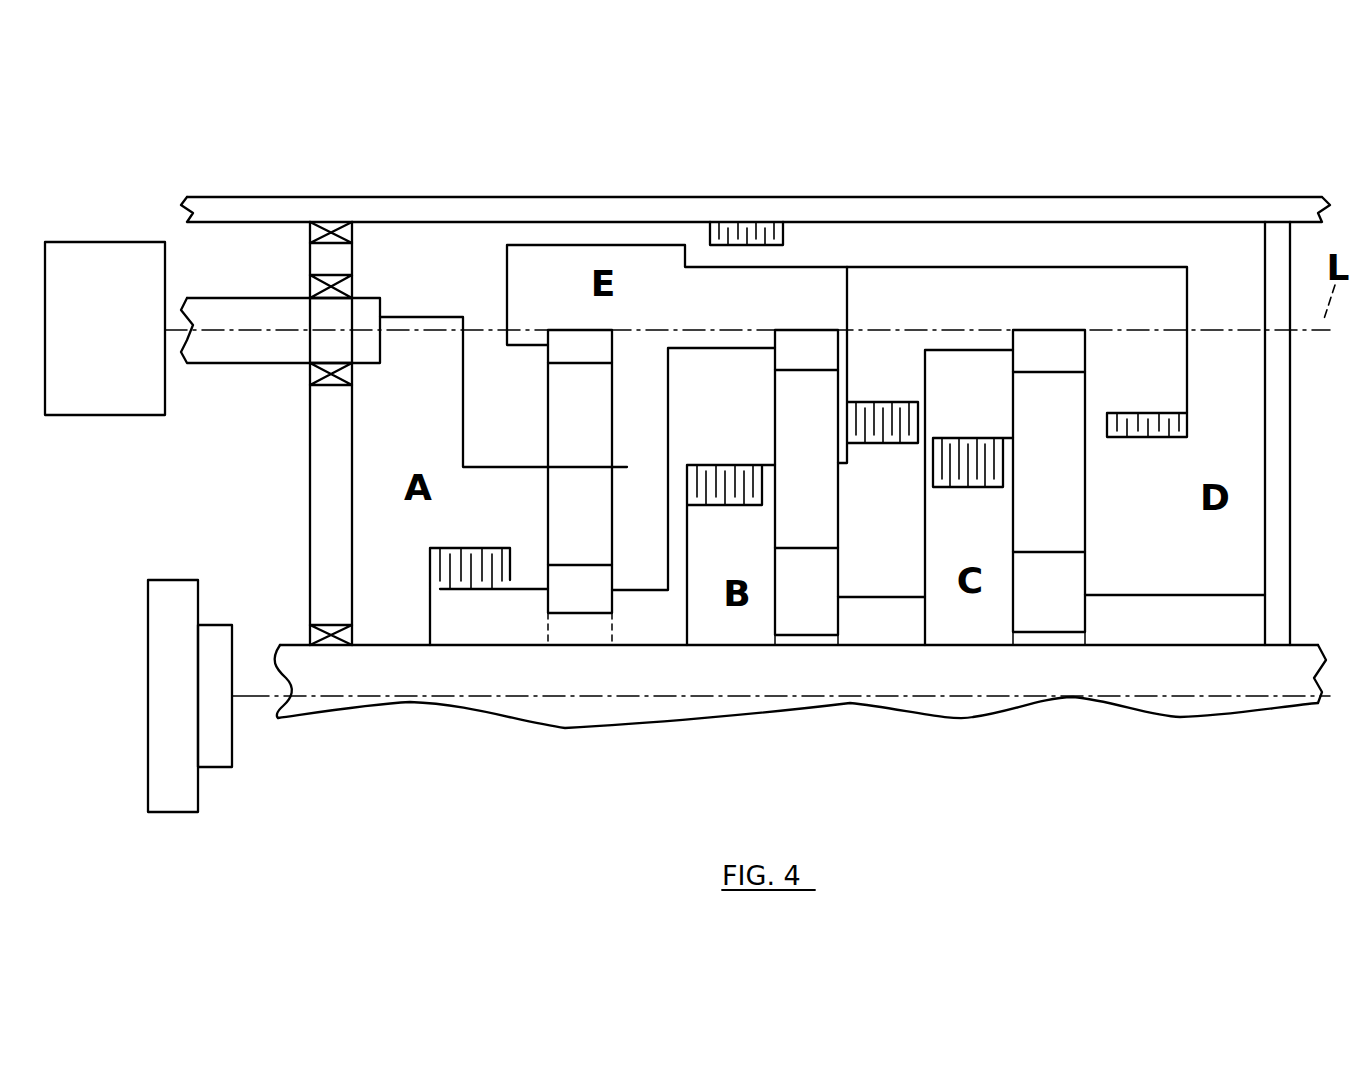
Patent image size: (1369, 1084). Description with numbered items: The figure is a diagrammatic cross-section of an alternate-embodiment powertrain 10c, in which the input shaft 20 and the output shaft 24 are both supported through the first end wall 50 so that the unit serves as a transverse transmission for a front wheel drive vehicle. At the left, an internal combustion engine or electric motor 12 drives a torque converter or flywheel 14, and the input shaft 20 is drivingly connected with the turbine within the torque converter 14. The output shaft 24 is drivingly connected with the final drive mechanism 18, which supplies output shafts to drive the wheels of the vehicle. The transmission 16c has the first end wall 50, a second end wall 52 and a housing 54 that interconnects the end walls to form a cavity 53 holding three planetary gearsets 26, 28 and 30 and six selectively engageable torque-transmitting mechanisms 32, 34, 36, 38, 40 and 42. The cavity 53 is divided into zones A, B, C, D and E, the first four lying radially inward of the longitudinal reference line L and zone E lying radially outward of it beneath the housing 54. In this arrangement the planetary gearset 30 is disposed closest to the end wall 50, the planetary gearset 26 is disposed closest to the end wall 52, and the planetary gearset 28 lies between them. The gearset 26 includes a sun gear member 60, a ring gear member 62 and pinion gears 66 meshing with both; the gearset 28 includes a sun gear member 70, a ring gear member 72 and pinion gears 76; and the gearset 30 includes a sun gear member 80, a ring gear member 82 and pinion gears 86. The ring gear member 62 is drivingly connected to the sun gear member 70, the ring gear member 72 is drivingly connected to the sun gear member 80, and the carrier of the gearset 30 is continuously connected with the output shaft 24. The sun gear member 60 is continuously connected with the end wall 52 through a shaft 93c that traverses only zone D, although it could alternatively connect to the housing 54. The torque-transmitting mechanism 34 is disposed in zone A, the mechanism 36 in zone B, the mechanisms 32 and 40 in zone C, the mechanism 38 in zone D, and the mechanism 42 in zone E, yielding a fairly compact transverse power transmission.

The powertrain 10c is at (246, 168).
The internal combustion engine or electric motor 12 is at (160, 676).
The torque converter or flywheel 14 is at (229, 678).
The transmission 16c is at (1303, 407).
The final drive mechanism 18 is at (103, 416).
The input shaft 20 is at (565, 728).
The output shaft 24 is at (255, 365).
The planetary gearset 26 is at (1054, 648).
The planetary gearset 28 is at (825, 648).
The planetary gearset 30 is at (593, 637).
The torque-transmitting mechanism 32 is at (935, 437).
The torque-transmitting mechanism 34 is at (443, 592).
The torque-transmitting mechanism 36 is at (703, 507).
The torque-transmitting mechanism 38 is at (1118, 438).
The torque-transmitting mechanism 40 is at (916, 447).
The torque-transmitting mechanism 42 is at (729, 222).
The first end wall 50 is at (308, 462).
The second end wall 52 is at (1292, 567).
The cavity 53 is at (1201, 266).
The housing 54 is at (1088, 197).
The sun gear member 60 is at (1036, 602).
The ring gear member 62 is at (1036, 366).
The pinion gears 66 is at (1036, 516).
The sun gear member 70 is at (793, 602).
The ring gear member 72 is at (793, 366).
The pinion gears 76 is at (793, 512).
The sun gear member 80 is at (567, 604).
The ring gear member 82 is at (567, 359).
The pinion gears 86 is at (567, 436).
The shaft 93c is at (1165, 597).